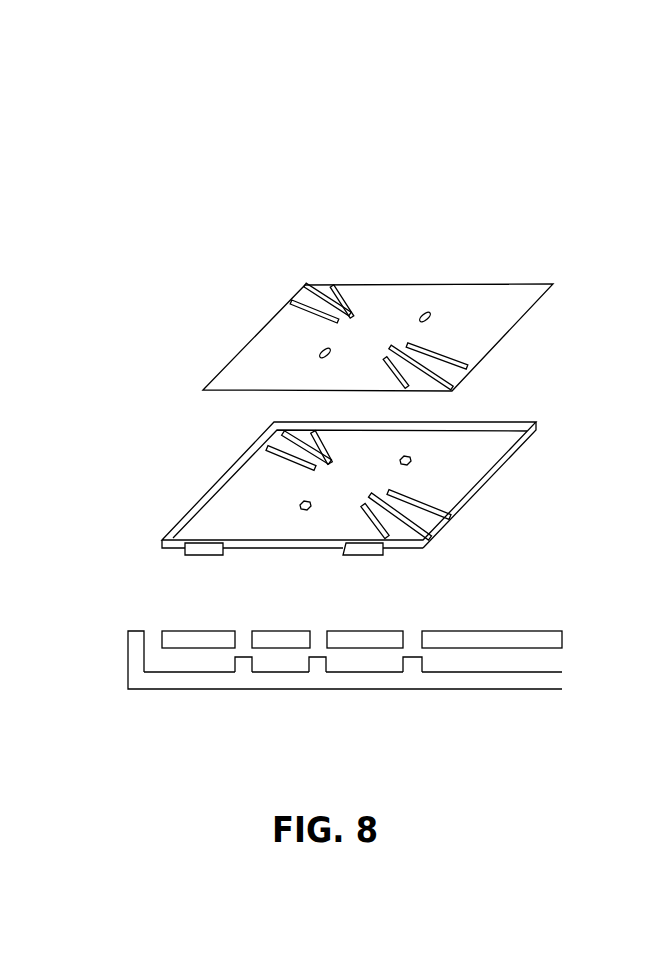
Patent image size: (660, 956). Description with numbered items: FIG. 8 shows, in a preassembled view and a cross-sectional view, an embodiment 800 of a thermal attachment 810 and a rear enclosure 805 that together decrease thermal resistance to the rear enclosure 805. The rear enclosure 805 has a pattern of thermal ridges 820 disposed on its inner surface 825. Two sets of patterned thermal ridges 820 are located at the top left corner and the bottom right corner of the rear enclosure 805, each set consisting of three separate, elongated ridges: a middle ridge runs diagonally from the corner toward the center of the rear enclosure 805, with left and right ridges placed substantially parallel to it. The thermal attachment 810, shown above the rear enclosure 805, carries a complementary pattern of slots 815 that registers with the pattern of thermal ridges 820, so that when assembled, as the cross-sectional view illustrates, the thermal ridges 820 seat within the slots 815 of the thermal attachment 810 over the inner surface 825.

The tray assembly 800 is at (130, 122).
The rear enclosure 805 is at (513, 420).
The thermal attachment 810 is at (428, 283).
The slots 815 is at (307, 290).
The thermal ridges 820 is at (270, 460).
The inner surface 825 is at (487, 457).